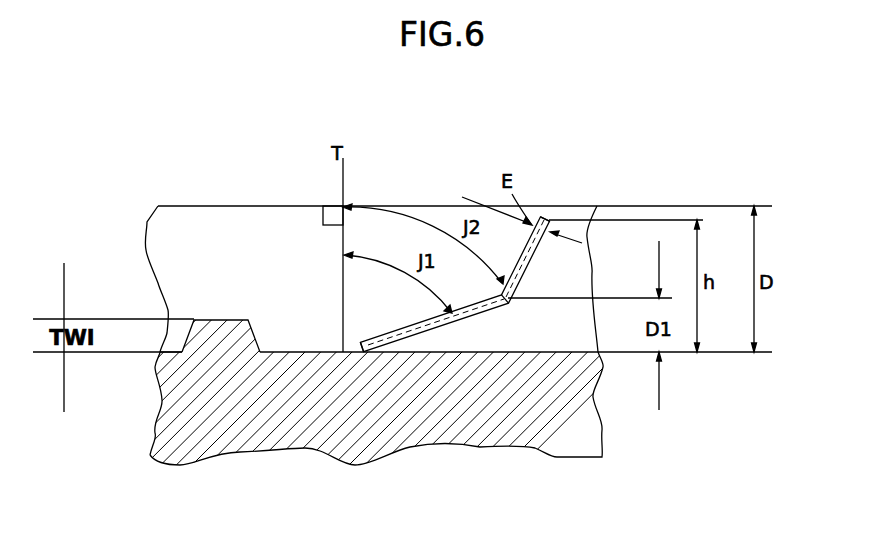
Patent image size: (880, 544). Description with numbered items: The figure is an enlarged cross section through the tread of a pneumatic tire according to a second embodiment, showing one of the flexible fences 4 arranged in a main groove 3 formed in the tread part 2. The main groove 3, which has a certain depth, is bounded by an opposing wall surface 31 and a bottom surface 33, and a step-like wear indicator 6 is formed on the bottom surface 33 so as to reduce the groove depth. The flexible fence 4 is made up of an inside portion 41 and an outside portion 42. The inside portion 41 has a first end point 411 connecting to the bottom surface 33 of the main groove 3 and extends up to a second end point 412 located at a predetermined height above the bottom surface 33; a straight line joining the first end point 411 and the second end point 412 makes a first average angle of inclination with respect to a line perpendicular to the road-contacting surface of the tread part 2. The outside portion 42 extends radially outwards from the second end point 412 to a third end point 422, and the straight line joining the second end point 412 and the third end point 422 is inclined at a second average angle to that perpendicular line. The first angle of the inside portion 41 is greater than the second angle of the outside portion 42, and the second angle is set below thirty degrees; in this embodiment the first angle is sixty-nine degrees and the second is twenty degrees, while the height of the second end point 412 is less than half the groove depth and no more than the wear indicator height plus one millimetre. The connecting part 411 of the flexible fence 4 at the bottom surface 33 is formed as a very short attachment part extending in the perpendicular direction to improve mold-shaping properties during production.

The tread part 2 is at (225, 204).
The main groove 3 is at (177, 238).
The wall surface 31 is at (216, 292).
The bottom surface 33 is at (283, 352).
The wear indicator 6 is at (207, 322).
The flexible fence 4 is at (467, 257).
The inside portion 41 is at (445, 328).
The first end point 411 is at (358, 349).
The second end point 412 is at (505, 301).
The outside portion 42 is at (537, 251).
The third end point 422 is at (547, 216).